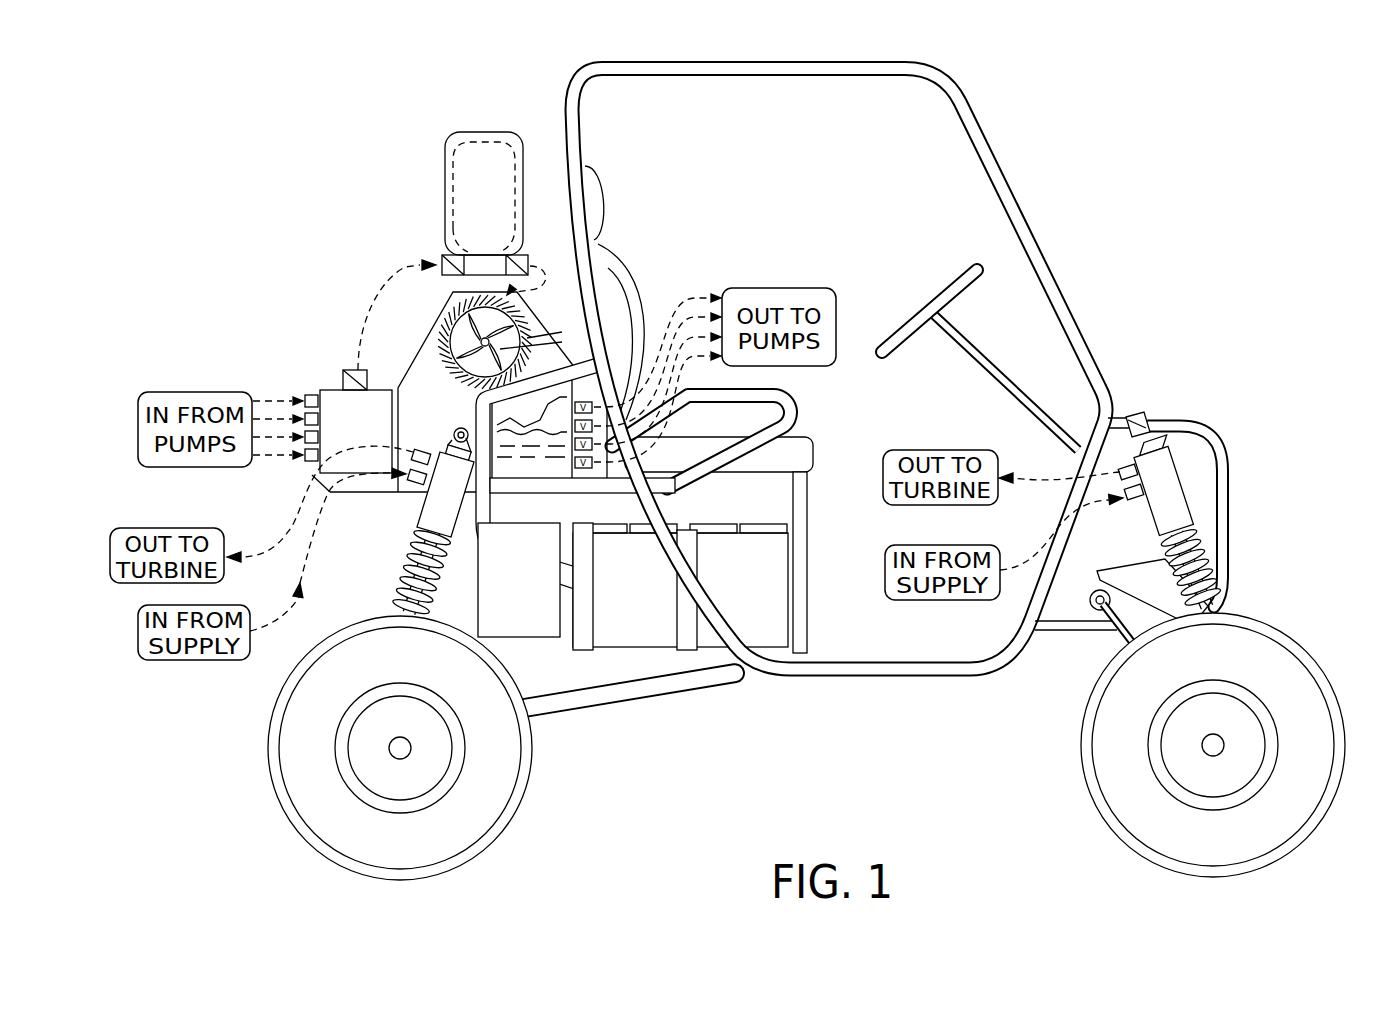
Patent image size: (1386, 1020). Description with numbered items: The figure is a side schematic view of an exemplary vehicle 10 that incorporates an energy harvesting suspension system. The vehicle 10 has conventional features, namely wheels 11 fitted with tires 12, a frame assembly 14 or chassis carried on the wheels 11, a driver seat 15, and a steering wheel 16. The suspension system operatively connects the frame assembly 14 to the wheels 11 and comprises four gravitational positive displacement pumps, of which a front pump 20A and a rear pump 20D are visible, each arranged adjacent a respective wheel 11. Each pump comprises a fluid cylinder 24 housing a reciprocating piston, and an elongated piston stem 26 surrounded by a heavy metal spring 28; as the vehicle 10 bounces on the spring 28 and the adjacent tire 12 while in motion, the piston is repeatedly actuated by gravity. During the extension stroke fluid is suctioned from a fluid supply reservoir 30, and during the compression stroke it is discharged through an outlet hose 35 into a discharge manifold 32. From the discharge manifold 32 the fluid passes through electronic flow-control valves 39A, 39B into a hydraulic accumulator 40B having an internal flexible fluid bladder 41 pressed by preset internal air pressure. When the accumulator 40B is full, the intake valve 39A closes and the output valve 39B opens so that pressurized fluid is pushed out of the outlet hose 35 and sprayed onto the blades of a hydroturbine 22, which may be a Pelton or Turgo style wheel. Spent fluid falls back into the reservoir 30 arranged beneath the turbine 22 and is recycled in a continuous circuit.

The vehicle 10 is at (816, 460).
The wheels 11 is at (480, 787).
The tires 12 is at (533, 763).
The frame assembly 14 is at (859, 670).
The driver seat 15 is at (617, 270).
The steering wheel 16 is at (957, 262).
The gravitational positive displacement pump 20A is at (392, 520).
The gravitational positive displacement pump 20D is at (1202, 486).
The hydroturbine 22 is at (438, 353).
The fluid cylinder 24 is at (1182, 497).
The piston stem 26 is at (1212, 597).
The spring 28 is at (1194, 557).
The fluid supply reservoir 30 is at (468, 391).
The discharge manifold 32 is at (348, 441).
The outlet hose 35 is at (534, 285).
The electronic flow-control valve 39A is at (343, 380).
The electronic flow-control valve 39B is at (522, 256).
The hydraulic accumulator 40B is at (451, 148).
The flexible fluid bladder 41 is at (447, 158).